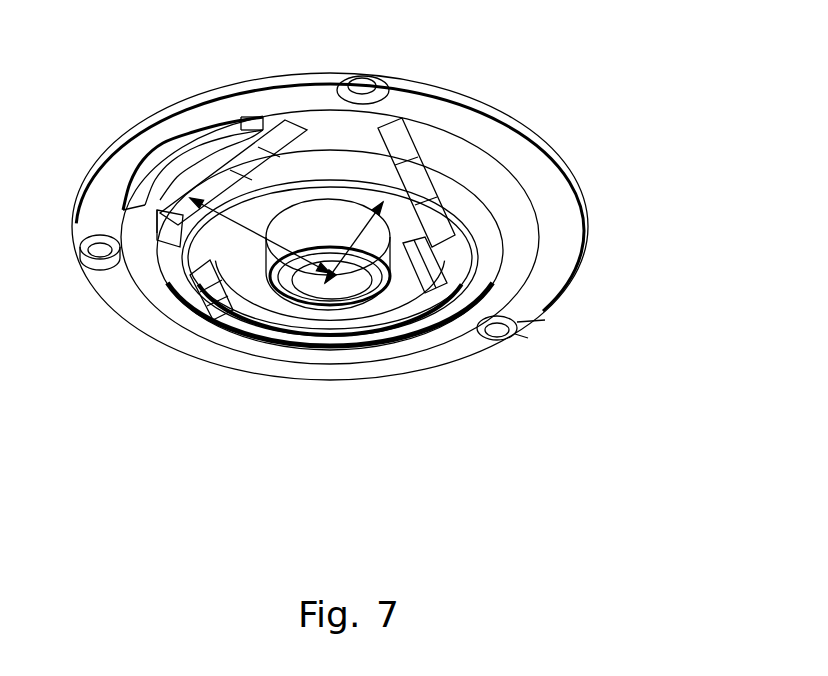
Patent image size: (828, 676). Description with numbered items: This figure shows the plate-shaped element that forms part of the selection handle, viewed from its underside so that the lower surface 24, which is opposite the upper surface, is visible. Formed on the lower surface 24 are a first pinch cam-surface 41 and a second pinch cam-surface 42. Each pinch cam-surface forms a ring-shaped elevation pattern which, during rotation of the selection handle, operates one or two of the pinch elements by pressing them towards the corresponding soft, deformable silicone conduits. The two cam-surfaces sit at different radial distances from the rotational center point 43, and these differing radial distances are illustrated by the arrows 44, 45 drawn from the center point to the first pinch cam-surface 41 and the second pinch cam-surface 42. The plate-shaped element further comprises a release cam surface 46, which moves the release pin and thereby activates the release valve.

The lower surface 24 is at (565, 238).
The first pinch cam-surface 41 is at (352, 193).
The second pinch cam-surface 42 is at (478, 221).
The rotational center point 43 is at (337, 290).
The arrow 44 is at (237, 223).
The arrow 45 is at (349, 242).
The release cam surface 46 is at (153, 153).